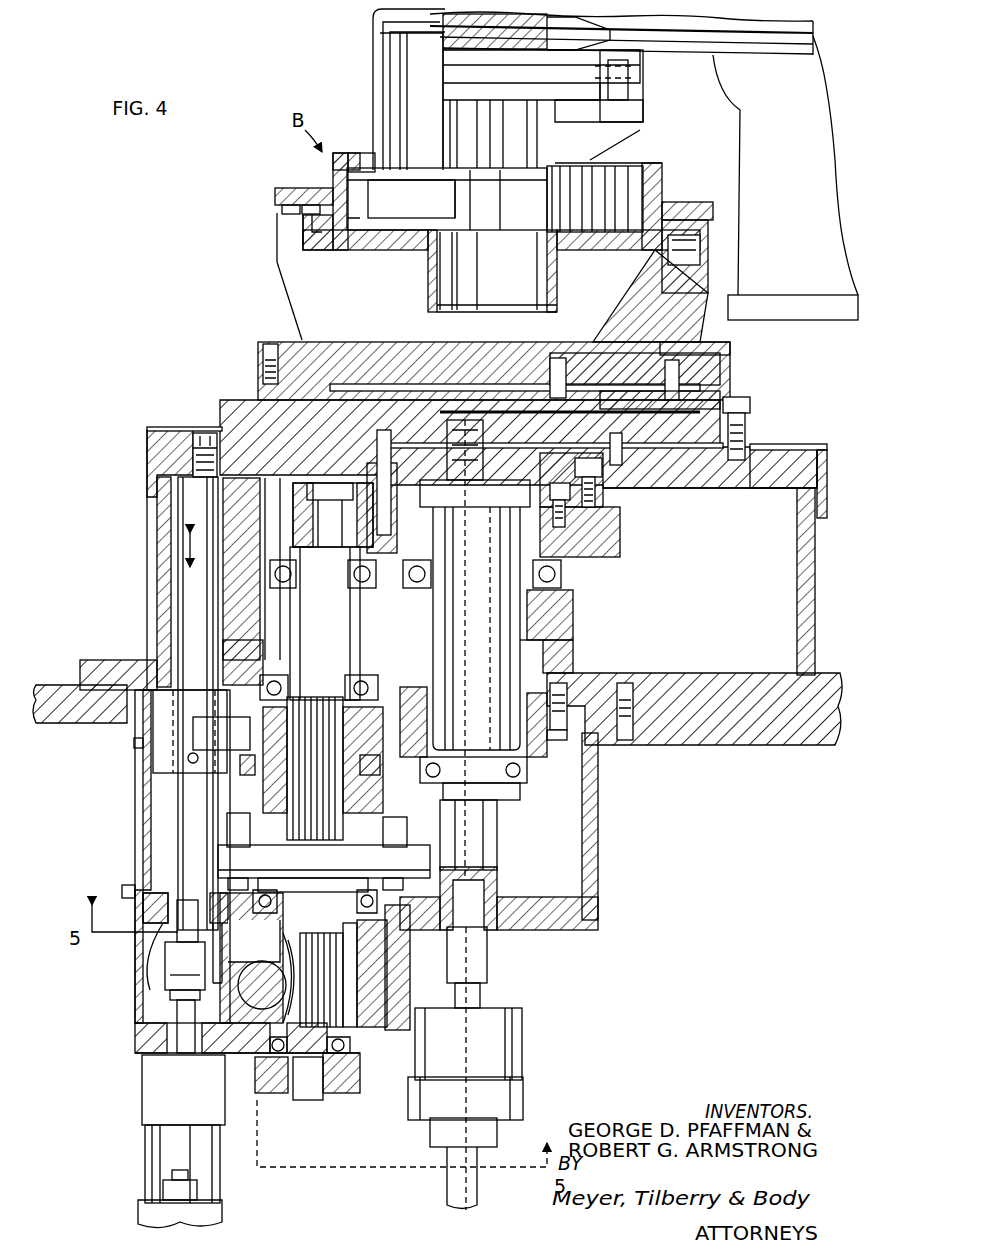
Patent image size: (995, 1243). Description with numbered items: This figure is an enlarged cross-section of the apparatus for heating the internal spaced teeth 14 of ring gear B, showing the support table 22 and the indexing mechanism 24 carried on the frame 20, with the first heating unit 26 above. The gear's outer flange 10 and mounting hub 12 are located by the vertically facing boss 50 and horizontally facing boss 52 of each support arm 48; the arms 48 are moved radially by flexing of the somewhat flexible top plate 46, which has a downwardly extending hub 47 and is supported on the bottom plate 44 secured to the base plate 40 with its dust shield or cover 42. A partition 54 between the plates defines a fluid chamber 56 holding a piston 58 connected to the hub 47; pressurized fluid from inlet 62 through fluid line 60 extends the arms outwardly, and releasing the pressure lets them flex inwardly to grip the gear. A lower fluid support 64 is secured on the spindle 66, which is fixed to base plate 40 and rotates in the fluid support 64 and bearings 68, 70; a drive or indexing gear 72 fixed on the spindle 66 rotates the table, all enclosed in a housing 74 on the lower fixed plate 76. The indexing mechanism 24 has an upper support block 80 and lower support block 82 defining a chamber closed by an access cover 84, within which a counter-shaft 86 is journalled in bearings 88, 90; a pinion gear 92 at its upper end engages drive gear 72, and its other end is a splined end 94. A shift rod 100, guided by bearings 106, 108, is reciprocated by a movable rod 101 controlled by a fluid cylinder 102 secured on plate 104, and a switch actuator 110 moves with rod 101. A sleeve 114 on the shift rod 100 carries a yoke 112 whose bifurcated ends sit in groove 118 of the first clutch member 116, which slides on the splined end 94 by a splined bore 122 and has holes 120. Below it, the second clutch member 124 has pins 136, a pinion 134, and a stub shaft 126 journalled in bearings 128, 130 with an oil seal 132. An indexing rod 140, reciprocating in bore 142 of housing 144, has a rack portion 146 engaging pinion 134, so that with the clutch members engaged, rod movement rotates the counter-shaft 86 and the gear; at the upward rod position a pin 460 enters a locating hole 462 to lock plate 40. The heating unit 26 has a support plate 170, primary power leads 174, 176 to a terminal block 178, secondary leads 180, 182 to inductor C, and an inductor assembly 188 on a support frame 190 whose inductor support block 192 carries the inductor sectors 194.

The outer flange 10 is at (280, 188).
The mounting hub 12 is at (312, 243).
The spaced teeth 14 is at (618, 172).
The frame 20 is at (48, 682).
The support table 22 is at (258, 365).
The indexing mechanism 24 is at (143, 772).
The first heating unit 26 is at (813, 133).
The base plate 40 is at (768, 450).
The dust shield (cover) 42 is at (825, 447).
The bottom plate 44 is at (720, 398).
The top plate 46 is at (690, 352).
The hub 47 is at (470, 375).
The support arms 48 is at (345, 307).
The vertically facing boss 50 is at (298, 204).
The horizontally facing boss 52 is at (310, 245).
The partition 54 is at (712, 368).
The fluid chamber 56 is at (262, 392).
The piston 58 is at (518, 475).
The fluid line 60 is at (530, 655).
The inlet 62 is at (477, 1160).
The lower fluid support 64 is at (522, 1040).
The spindle 66 is at (573, 620).
The bearing 68 is at (562, 572).
The bearing 70 is at (522, 782).
The drive (indexing) gear 72 is at (618, 522).
The housing 74 is at (808, 595).
The lower fixed plate 76 is at (830, 692).
The upper support block 80 is at (245, 530).
The lower support block 82 is at (145, 905).
The access cover 84 is at (135, 848).
The counter-shaft 86 is at (303, 605).
The bearing 88 is at (285, 582).
The bearing 90 is at (285, 668).
The pinion gear 92 is at (297, 513).
The splined end 94 is at (340, 812).
The shift rod 100 is at (178, 582).
The movable rod 101 is at (148, 983).
The fluid cylinder 102 is at (145, 1147).
The plate 104 is at (242, 1045).
The bearing 106 is at (157, 518).
The bearing 108 is at (165, 948).
The switch actuator 110 is at (197, 1192).
The yoke 112 is at (235, 740).
The sleeve 114 is at (172, 728).
The first clutch member 116 is at (350, 765).
The groove 118 is at (365, 700).
The holes 120 is at (248, 808).
The splined bore 122 is at (324, 861).
The second clutch member 124 is at (335, 870).
The stub shaft 126 is at (345, 935).
The bearing 128 is at (405, 918).
The bearing 130 is at (395, 1008).
The oil seal 132 is at (337, 1095).
The pinion 134 is at (343, 968).
The pins 136 is at (227, 825).
The indexing rod 140 is at (263, 974).
The bore 142 is at (260, 972).
The housing 144 is at (232, 1015).
The rack portion 146 is at (320, 969).
The support plate 170 is at (800, 300).
The primary power lead 174 is at (810, 24).
The primary power lead 176 is at (810, 46).
The terminal block 178 is at (560, 48).
The secondary lead 180 is at (373, 28).
The secondary lead 182 is at (395, 60).
The inductor assembly 188 is at (348, 152).
The support frame 190 is at (615, 122).
The inductor support block 192 is at (478, 218).
The inductor sectors 194 is at (355, 201).
The pin 460 is at (160, 468).
The locating hole 462 is at (205, 428).